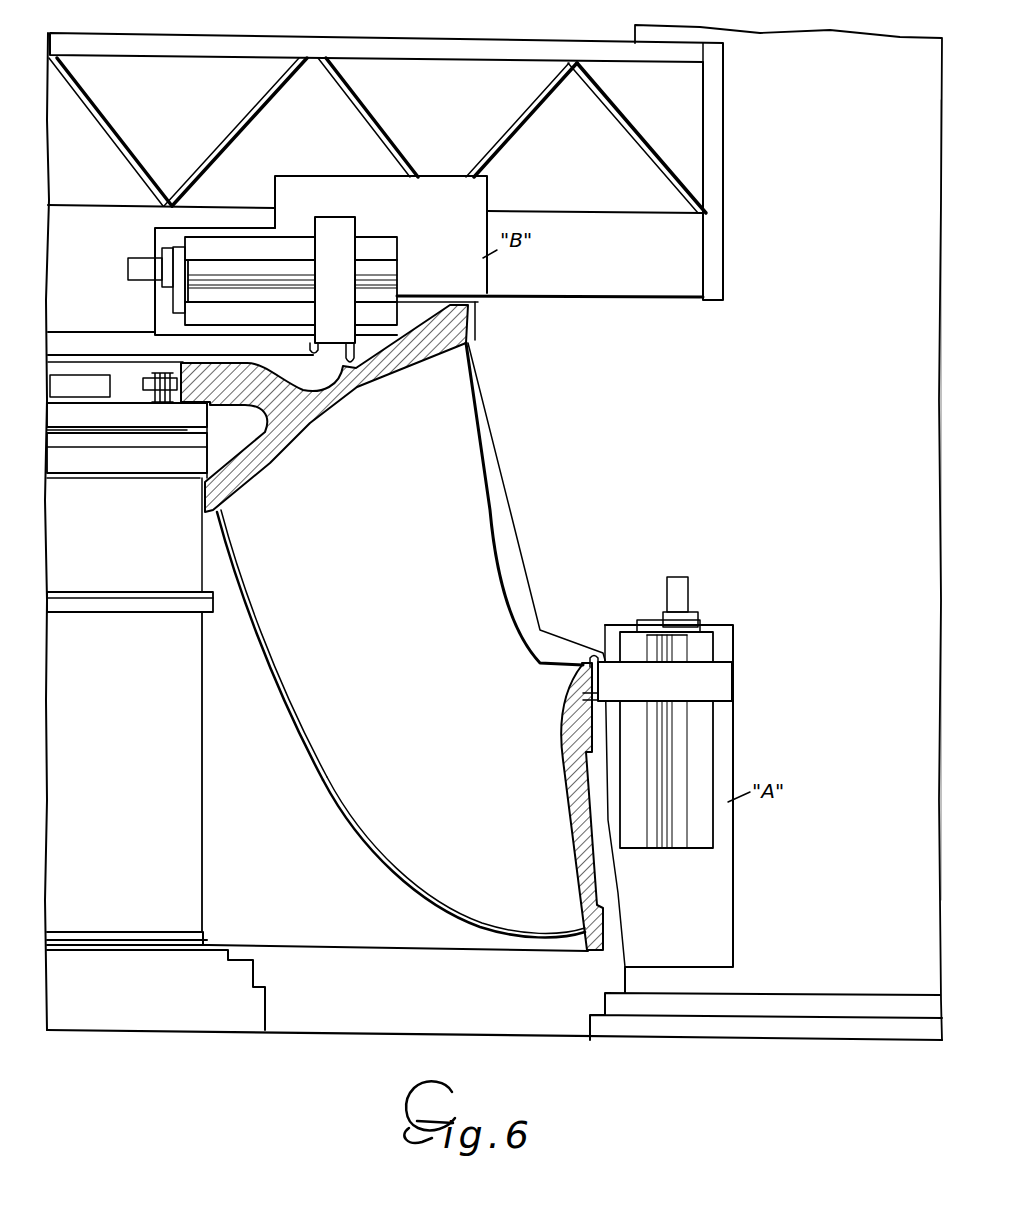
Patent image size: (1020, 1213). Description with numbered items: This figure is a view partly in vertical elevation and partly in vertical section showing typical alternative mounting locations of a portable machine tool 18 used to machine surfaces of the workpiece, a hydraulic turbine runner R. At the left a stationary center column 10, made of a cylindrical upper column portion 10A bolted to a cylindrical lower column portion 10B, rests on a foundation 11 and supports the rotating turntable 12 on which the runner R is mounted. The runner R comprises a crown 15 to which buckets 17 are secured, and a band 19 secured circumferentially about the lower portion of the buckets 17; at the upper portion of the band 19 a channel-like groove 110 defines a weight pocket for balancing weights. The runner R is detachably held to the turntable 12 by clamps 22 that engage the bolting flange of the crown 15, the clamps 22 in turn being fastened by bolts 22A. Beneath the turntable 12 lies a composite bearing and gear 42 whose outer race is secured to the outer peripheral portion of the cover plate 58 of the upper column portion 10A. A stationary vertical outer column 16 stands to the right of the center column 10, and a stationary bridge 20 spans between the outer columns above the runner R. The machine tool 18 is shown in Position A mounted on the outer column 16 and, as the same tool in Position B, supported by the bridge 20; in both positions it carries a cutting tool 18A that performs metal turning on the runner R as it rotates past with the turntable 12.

The stationary bridge 20 is at (436, 30).
The portable machine tool 18 is at (368, 241).
The cutting tool 18A is at (356, 366).
The crown 15 is at (323, 408).
The clamps 22 is at (140, 382).
The bolts 22A is at (163, 402).
The turntable 12 is at (207, 418).
The composite bearing and gear 42 is at (205, 440).
The cover plate 58 is at (203, 468).
The upper column portion 10A is at (198, 536).
The center column 10 is at (214, 597).
The lower column portion 10B is at (195, 836).
The buckets 17 is at (368, 836).
The foundation 11 is at (261, 1006).
The band 19 is at (595, 898).
The channel-like groove 110 is at (588, 692).
The outer column 16 is at (760, 427).
The runner R is at (478, 494).